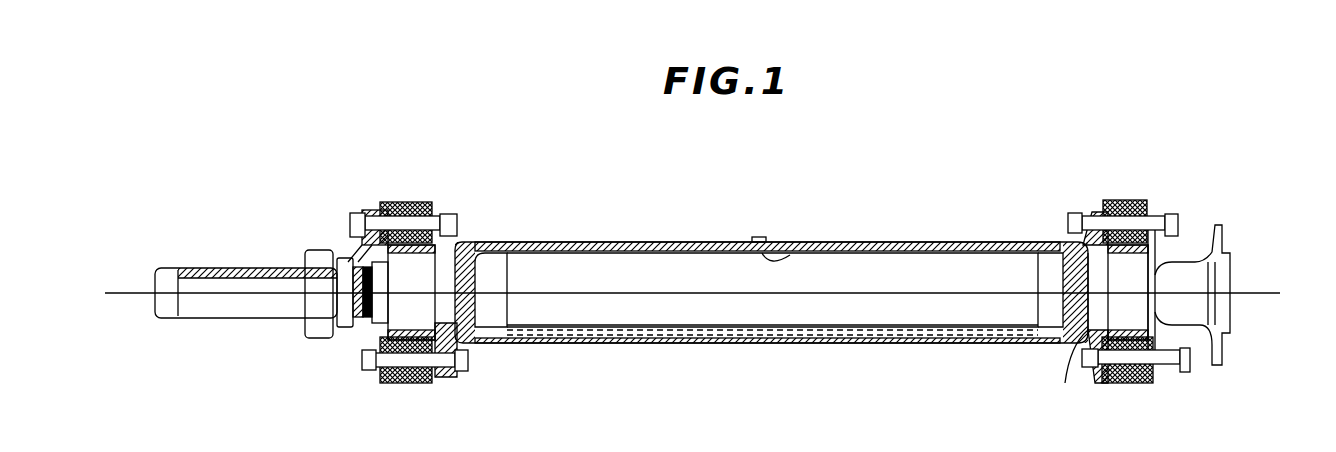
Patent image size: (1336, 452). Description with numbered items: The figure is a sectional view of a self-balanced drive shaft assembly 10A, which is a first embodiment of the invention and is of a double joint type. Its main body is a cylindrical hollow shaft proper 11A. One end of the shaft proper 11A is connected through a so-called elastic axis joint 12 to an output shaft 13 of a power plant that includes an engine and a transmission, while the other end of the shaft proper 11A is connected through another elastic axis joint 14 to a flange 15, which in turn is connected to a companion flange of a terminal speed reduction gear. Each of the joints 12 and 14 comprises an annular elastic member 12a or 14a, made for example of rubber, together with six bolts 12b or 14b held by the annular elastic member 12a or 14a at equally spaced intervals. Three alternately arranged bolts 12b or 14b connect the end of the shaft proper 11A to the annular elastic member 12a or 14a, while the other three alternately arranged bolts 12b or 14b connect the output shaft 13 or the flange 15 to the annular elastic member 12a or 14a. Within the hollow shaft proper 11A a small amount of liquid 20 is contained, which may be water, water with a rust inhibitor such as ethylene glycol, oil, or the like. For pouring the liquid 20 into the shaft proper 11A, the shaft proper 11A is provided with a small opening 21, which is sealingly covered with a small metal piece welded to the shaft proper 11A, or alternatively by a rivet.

The self-balanced drive shaft assembly 10A is at (938, 241).
The shaft proper 11A is at (620, 242).
The elastic axis joint 12 is at (416, 192).
The annular elastic member 12a is at (388, 338).
The bolts 12b is at (388, 200).
The output shaft 13 is at (216, 268).
The elastic axis joint 14 is at (1150, 197).
The annular elastic member 14a is at (1090, 333).
The bolts 14b is at (1115, 222).
The flange 15 is at (1218, 358).
The liquid 20 is at (654, 340).
The small opening 21 is at (785, 250).